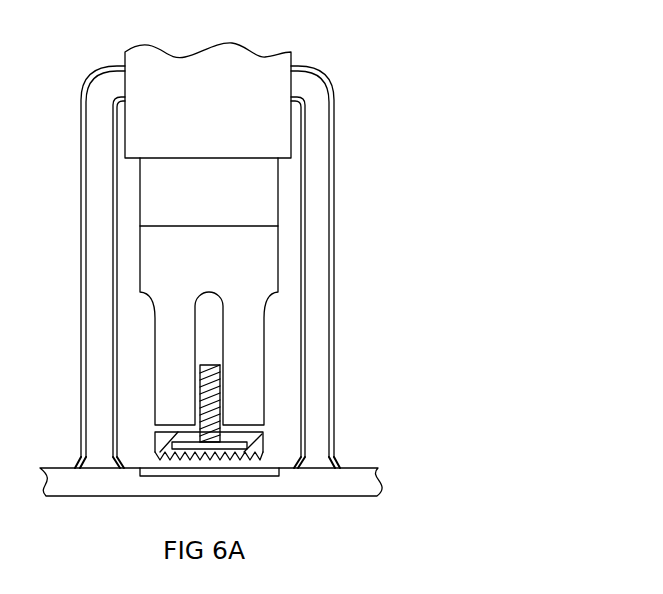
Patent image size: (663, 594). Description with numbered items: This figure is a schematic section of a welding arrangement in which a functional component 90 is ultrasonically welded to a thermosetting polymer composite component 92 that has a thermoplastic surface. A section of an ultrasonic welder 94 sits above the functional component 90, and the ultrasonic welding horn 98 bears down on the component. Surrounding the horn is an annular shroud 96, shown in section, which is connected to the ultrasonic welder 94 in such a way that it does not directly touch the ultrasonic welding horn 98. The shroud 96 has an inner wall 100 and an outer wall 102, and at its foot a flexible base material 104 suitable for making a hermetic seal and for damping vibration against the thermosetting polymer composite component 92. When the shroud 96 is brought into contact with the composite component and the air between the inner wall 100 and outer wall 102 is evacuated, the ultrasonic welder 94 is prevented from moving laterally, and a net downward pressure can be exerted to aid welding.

The functional component 90 is at (325, 435).
The thermosetting polymer composite component 92 is at (418, 485).
The ultrasonic welder 94 is at (306, 113).
The shroud 96 is at (377, 138).
The ultrasonic welding horn 98 is at (312, 357).
The inner wall 100 is at (360, 203).
The outer wall 102 is at (393, 240).
The flexible base material 104 is at (400, 457).